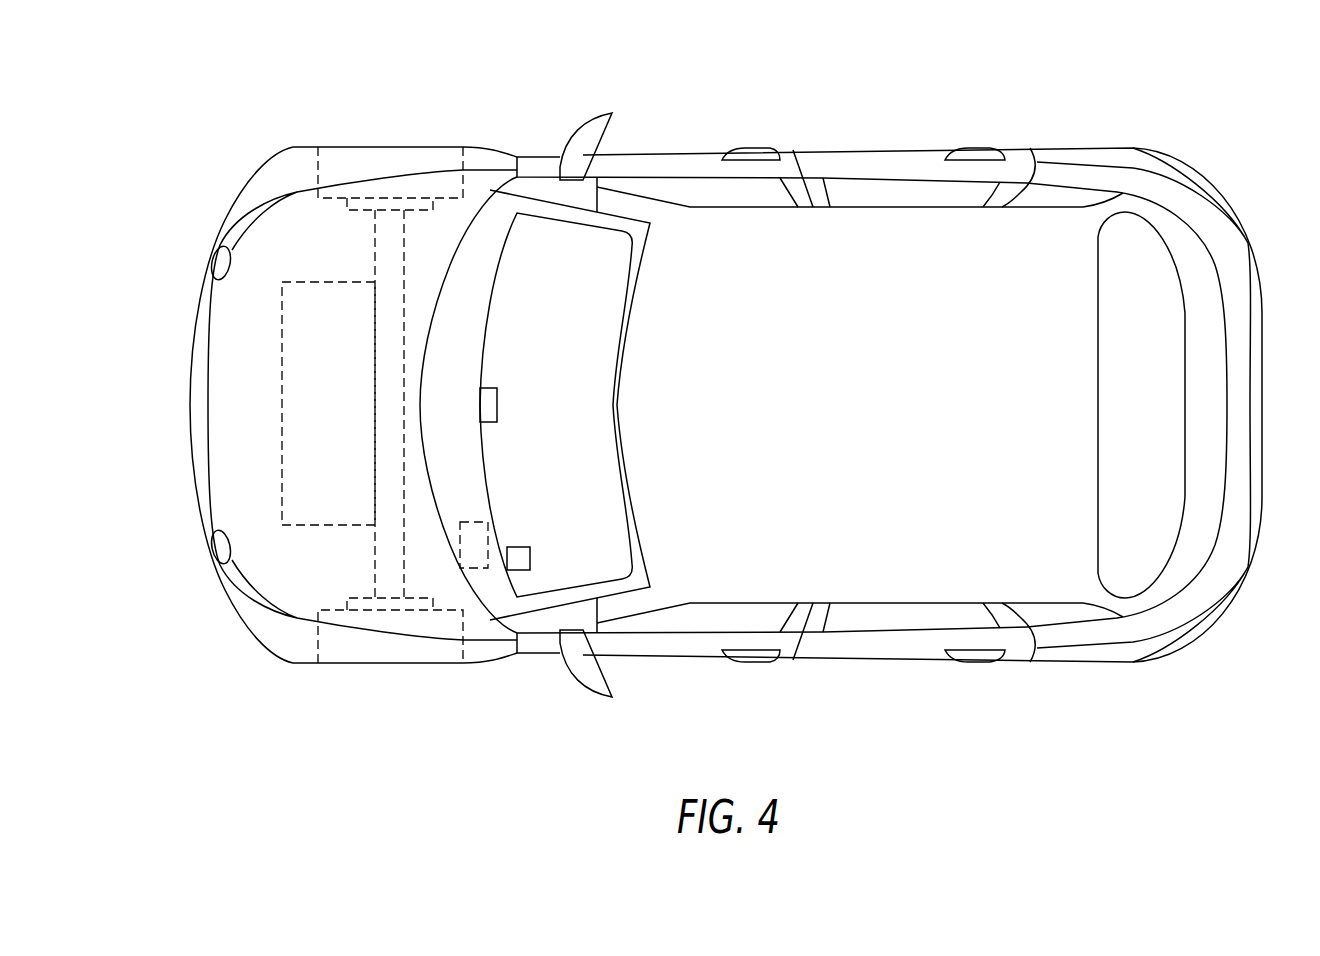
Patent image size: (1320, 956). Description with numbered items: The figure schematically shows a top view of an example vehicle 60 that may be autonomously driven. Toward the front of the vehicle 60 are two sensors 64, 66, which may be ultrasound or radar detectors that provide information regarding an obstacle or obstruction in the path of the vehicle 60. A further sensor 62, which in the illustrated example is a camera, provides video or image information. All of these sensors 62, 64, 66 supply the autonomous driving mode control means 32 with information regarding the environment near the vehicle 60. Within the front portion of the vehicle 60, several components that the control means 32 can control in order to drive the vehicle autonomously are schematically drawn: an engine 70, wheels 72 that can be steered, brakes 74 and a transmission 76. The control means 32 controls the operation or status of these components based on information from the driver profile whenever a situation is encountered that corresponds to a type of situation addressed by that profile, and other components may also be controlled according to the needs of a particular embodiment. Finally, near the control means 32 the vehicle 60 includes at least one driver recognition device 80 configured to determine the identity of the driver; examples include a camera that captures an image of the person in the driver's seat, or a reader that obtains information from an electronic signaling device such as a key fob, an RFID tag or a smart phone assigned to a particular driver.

The vehicle 60 is at (1203, 143).
The sensor 62 is at (490, 400).
The sensor 64 is at (220, 257).
The sensor 66 is at (220, 550).
The engine 70 is at (310, 388).
The wheels 72 is at (362, 645).
The brakes 74 is at (418, 613).
The transmission 76 is at (408, 293).
The autonomous driving mode control means 32 is at (477, 530).
The driver recognition device 80 is at (530, 552).